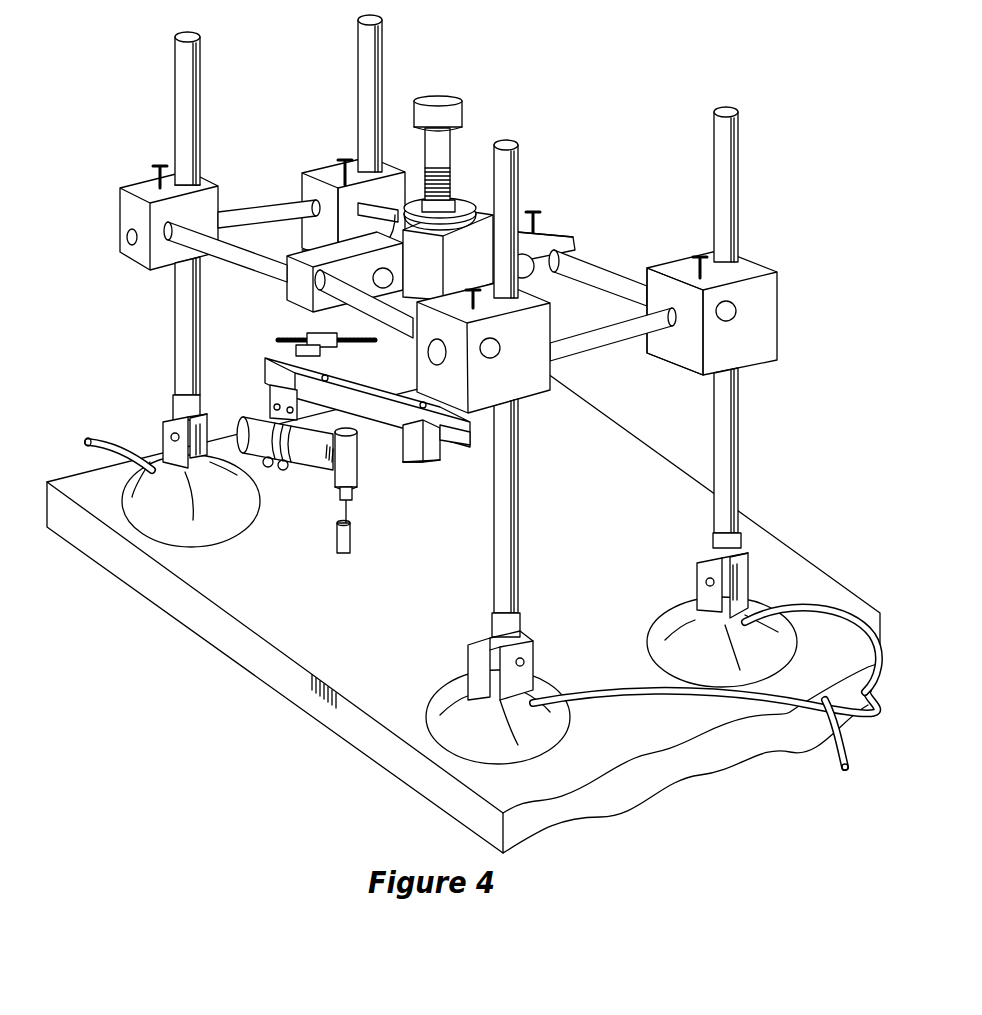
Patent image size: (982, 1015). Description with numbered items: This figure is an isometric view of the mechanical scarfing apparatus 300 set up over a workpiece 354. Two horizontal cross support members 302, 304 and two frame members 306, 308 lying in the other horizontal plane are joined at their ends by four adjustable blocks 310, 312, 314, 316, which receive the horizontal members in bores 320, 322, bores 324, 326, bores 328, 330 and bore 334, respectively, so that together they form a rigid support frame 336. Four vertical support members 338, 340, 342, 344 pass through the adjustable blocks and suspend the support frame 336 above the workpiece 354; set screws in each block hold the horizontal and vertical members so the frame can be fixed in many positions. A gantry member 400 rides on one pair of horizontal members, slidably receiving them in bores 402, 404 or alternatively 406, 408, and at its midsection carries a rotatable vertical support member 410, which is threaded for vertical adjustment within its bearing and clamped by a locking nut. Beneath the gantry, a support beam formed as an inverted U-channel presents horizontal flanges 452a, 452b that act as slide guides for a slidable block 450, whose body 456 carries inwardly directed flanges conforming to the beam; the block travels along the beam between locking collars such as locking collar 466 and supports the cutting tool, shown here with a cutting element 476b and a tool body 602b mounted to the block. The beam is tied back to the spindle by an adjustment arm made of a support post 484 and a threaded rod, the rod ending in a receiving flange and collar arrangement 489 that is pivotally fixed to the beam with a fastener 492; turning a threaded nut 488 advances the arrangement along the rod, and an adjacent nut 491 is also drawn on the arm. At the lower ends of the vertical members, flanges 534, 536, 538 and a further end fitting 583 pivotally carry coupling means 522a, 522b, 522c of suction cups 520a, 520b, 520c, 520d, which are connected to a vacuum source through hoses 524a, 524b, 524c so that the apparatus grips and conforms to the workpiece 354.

The mechanical scarfing apparatus 300 is at (620, 105).
The horizontal cross support member 302 is at (242, 250).
The horizontal cross support member 304 is at (602, 266).
The frame member 306 is at (240, 208).
The frame member 308 is at (608, 346).
The adjustable block 310 is at (206, 182).
The adjustable block 312 is at (528, 397).
The adjustable block 314 is at (758, 286).
The adjustable block 316 is at (325, 170).
The bore 320 is at (160, 213).
The bore 322 is at (127, 263).
The bore 324 is at (489, 361).
The bore 326 is at (437, 346).
The bore 328 is at (675, 352).
The bore 330 is at (732, 324).
The bore 334 is at (368, 217).
The support frame 336 is at (311, 195).
The vertical support member 338 is at (184, 348).
The vertical support member 340 is at (514, 522).
The vertical support member 342 is at (737, 443).
The vertical support member 344 is at (382, 46).
The workpiece 354 is at (386, 625).
The gantry member 400 is at (570, 230).
The bore 402 is at (330, 288).
The bore 404 is at (572, 238).
The bore 406 is at (372, 212).
The bore 408 is at (531, 212).
The rotatable vertical support member 410 is at (467, 190).
The slidable block 450 is at (272, 378).
The horizontal flange 452a is at (417, 463).
The horizontal flange 452b is at (444, 446).
The body 456 is at (282, 461).
The locking collar 466 is at (420, 494).
The probe tip 476b is at (351, 548).
The support post 484 is at (386, 329).
The threaded nut 488 is at (313, 346).
The receiving flange and collar arrangement 489 is at (306, 336).
The lock nut 491 is at (300, 351).
The fastener 492 is at (328, 378).
The suction cup 520a is at (187, 533).
The suction cup 520b is at (554, 742).
The suction cup 520c is at (768, 669).
The suction cup 520d is at (402, 456).
The coupling means 522a is at (207, 424).
The coupling means 522b is at (535, 648).
The coupling means 522c is at (753, 566).
The hose 524a is at (150, 446).
The hose 524b is at (560, 690).
The vacuum tube 524c is at (800, 590).
The flange 534 is at (521, 612).
The flange 536 is at (716, 534).
The flange 538 is at (372, 433).
The collar 583 is at (181, 401).
The cylinder 602b is at (314, 463).